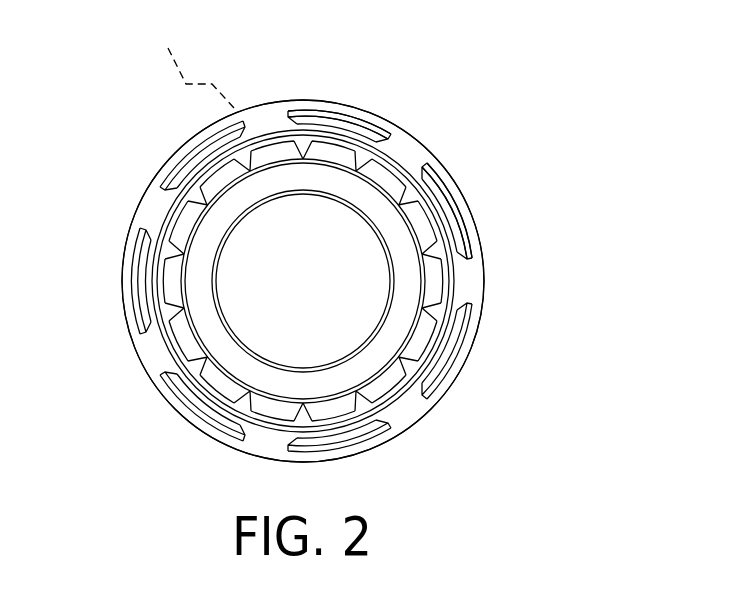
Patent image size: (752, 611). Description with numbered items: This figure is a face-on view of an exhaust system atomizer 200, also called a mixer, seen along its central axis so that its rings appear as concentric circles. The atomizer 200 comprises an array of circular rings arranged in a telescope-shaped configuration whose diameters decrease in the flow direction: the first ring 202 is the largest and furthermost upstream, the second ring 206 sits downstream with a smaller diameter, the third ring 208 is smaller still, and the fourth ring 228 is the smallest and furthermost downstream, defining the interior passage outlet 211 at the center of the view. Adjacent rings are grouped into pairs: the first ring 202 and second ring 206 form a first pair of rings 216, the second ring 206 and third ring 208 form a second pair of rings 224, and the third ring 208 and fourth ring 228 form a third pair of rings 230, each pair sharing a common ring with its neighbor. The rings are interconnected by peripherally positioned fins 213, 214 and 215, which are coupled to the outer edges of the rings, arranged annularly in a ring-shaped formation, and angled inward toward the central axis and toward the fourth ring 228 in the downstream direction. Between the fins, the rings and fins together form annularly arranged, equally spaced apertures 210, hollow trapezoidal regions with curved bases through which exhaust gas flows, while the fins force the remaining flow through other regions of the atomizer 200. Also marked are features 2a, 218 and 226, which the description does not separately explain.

The section line 2a is at (186, 54).
The exhaust system atomizer 200 is at (553, 143).
The first ring 202 is at (410, 135).
The second ring 206 is at (375, 142).
The third ring 208 is at (342, 128).
The aperture 210 is at (158, 170).
The interior passage outlet 211 is at (302, 342).
The fin 213 is at (416, 405).
The fin 214 is at (447, 222).
The fin 215 is at (450, 268).
The first pair of rings 216 is at (320, 116).
The outer plate segment 218 is at (285, 415).
The second pair of rings 224 is at (208, 165).
The outer plate segment 226 is at (446, 336).
The fourth ring 228 is at (367, 200).
The third pair of rings 230 is at (220, 250).